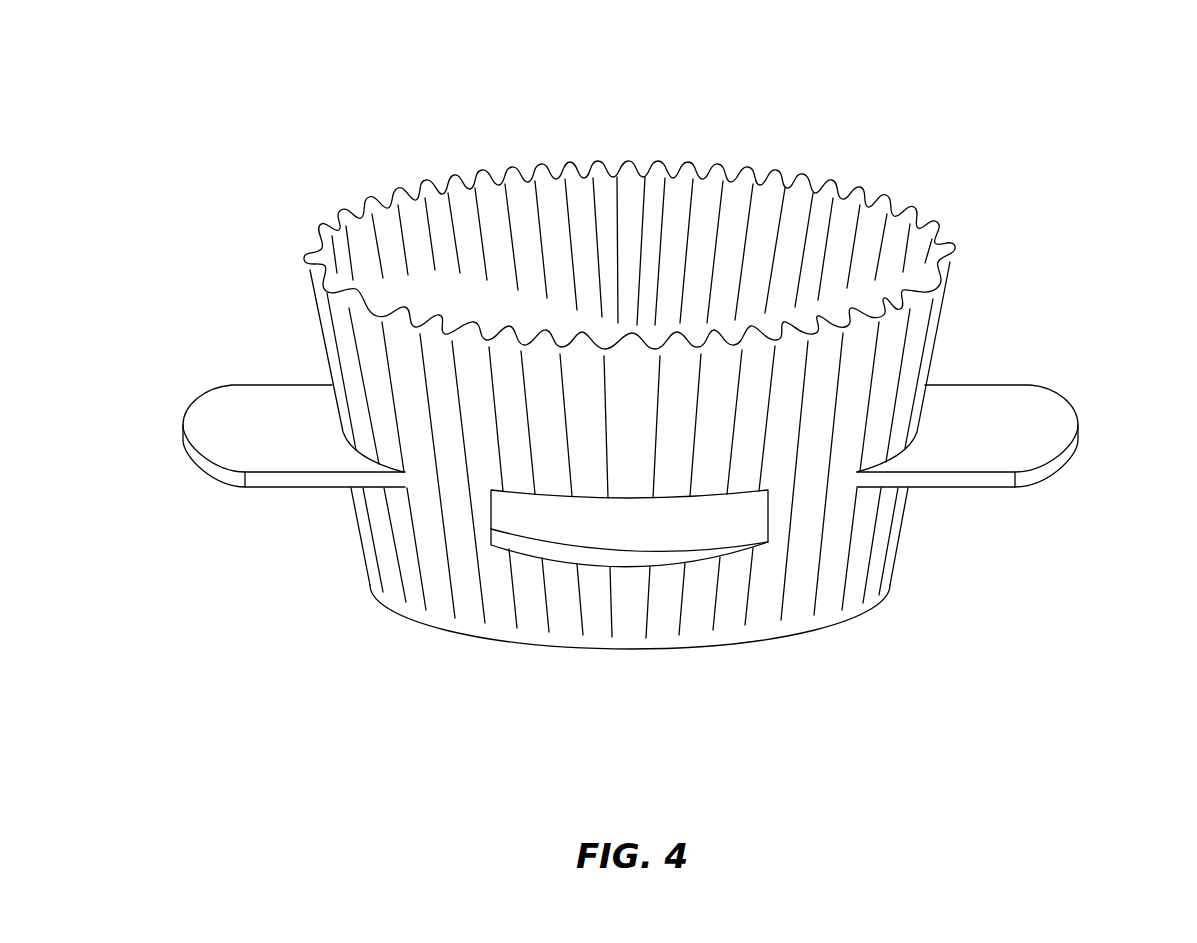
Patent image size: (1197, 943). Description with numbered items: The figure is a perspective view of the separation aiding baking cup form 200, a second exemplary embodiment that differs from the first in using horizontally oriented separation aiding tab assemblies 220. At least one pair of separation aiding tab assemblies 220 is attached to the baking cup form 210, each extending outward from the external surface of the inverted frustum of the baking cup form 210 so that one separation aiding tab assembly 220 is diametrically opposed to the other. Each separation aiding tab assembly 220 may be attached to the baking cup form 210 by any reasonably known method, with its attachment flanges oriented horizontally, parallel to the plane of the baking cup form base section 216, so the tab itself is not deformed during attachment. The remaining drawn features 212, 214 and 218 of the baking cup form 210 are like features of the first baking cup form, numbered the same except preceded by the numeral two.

The separation aiding baking cup form 200 is at (278, 102).
The baking cup form 210 is at (440, 530).
The outer wall 212 is at (818, 562).
The rim 214 is at (625, 156).
The baking cup form base section 216 is at (628, 655).
The interior cavity 218 is at (789, 278).
The separation aiding tab assembly 220 is at (188, 452).